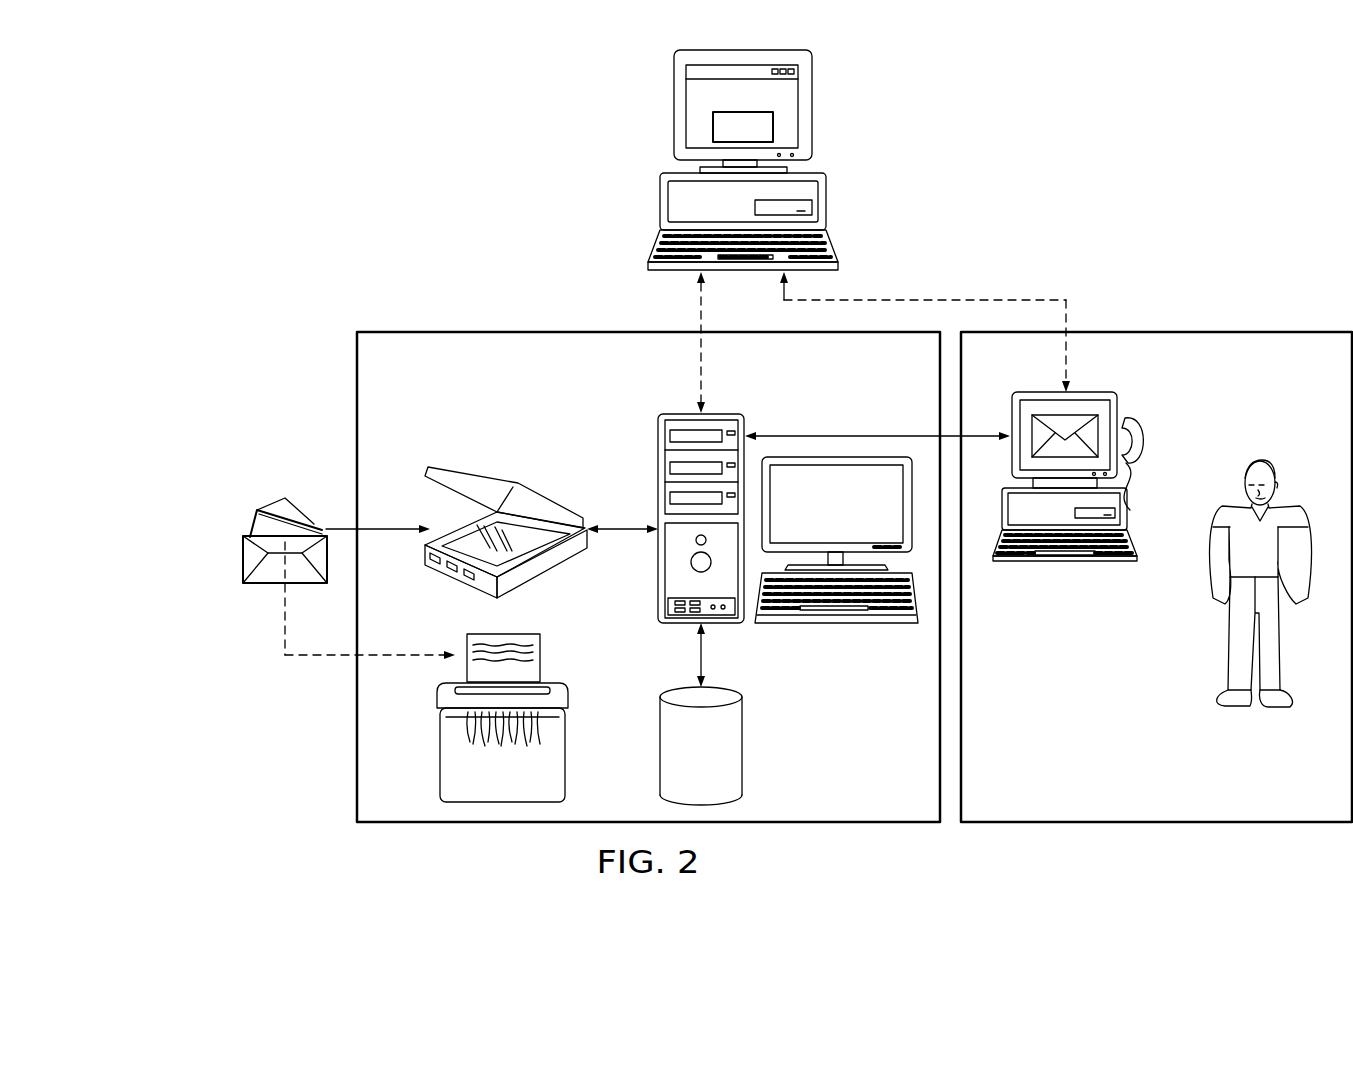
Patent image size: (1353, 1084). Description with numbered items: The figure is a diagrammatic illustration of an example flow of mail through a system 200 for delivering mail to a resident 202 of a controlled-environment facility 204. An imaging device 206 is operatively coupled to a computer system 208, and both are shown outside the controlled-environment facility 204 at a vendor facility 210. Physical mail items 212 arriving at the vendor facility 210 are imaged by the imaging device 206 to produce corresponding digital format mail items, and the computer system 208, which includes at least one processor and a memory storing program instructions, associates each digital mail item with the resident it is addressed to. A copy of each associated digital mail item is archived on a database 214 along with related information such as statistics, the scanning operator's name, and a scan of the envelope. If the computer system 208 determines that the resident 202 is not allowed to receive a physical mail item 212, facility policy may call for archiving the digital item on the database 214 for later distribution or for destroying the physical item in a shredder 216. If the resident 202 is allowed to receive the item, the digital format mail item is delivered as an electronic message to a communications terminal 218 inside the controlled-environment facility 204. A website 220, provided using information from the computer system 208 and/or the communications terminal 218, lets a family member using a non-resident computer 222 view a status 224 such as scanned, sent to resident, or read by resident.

The system 200 is at (288, 310).
The resident 202 is at (1281, 708).
The controlled-environment facility 204 is at (1260, 322).
The imaging device 206 is at (474, 471).
The computer system 208 is at (647, 462).
The vendor facility 210 is at (506, 322).
The physical mail items 212 is at (251, 523).
The database 214 is at (682, 762).
The shredder 216 is at (440, 748).
The communications terminal 218 is at (1068, 574).
The website 220 is at (800, 106).
The non-resident computer 222 is at (734, 148).
The status 224 is at (712, 128).